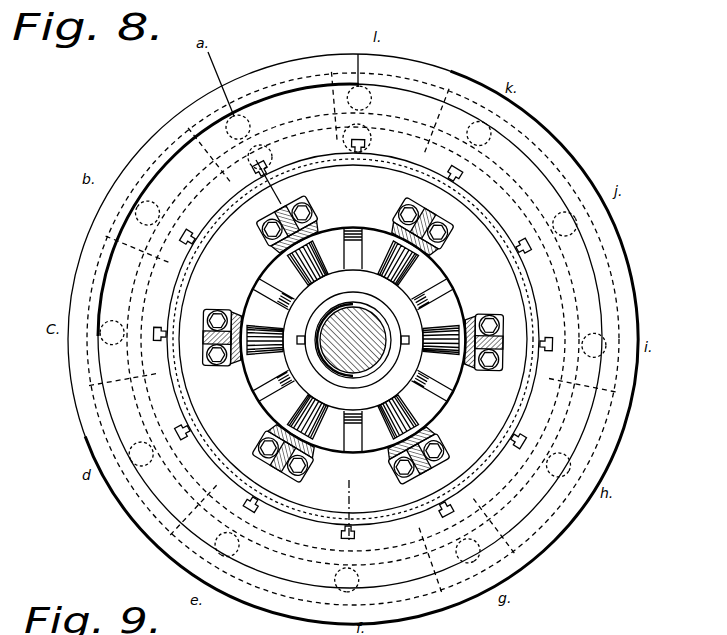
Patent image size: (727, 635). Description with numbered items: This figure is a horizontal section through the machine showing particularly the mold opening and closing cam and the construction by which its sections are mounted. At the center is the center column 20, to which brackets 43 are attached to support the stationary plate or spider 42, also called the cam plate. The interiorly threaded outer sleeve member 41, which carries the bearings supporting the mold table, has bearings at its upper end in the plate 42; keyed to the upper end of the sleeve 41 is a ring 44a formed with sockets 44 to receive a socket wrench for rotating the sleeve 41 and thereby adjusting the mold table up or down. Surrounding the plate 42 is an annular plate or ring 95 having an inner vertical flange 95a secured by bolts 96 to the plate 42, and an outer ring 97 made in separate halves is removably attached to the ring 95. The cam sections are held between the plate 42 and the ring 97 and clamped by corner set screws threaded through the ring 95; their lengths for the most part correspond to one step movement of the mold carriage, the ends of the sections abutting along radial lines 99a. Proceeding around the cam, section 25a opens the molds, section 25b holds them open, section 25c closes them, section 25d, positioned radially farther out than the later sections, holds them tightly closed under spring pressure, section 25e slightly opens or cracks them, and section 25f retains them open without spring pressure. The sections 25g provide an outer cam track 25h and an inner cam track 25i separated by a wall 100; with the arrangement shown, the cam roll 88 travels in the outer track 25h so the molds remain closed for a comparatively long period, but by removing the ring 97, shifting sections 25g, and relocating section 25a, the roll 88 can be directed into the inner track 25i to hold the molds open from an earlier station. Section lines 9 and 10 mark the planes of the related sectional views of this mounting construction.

The section line 9— 9 is at (240, 129).
The section line 10— 10 is at (353, 507).
The center column 20 is at (353, 285).
The outer sleeve member 41 is at (390, 344).
The stationary plate 42 is at (342, 340).
The brackets 43 is at (353, 340).
The sockets 44 is at (330, 340).
The ring 44a is at (332, 338).
The cam roll 88 is at (408, 339).
The annular plate or ring 95 is at (421, 339).
The inner vertical flange 95a is at (353, 339).
The bolts 96 is at (352, 331).
The outer ring 97 is at (353, 329).
The radial lines 99a is at (374, 339).
The wall 100 is at (406, 339).
The cam section for opening the molds 25a is at (455, 98).
The cam section for holding the molds open 25b is at (335, 82).
The cam section for closing the molds 25c is at (187, 133).
The cam section for holding the molds closed under spring pressure 25d is at (106, 232).
The mold cracking cam section 25e is at (90, 396).
The cam section retaining the molds open without spring pressure 25f is at (165, 531).
The double cam track sections 25g is at (454, 580).
The outer cam track 25h is at (522, 543).
The inner cam track 25i is at (614, 390).